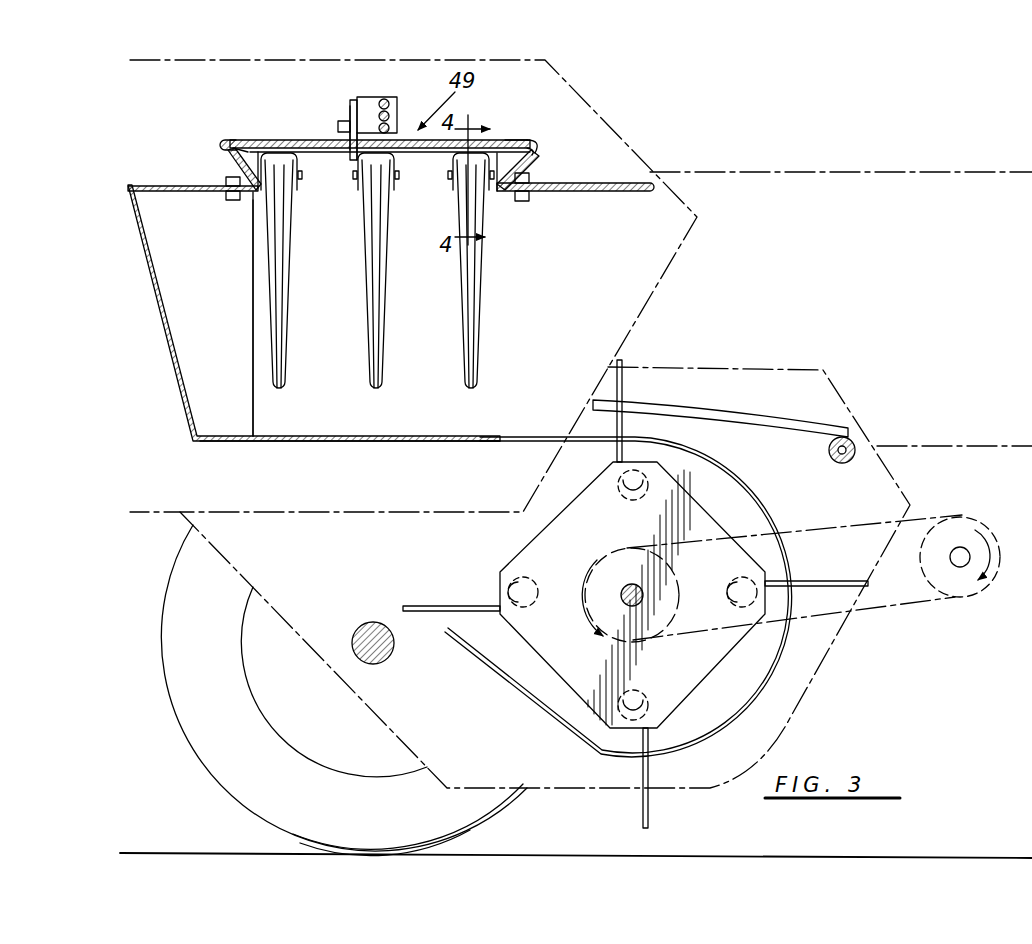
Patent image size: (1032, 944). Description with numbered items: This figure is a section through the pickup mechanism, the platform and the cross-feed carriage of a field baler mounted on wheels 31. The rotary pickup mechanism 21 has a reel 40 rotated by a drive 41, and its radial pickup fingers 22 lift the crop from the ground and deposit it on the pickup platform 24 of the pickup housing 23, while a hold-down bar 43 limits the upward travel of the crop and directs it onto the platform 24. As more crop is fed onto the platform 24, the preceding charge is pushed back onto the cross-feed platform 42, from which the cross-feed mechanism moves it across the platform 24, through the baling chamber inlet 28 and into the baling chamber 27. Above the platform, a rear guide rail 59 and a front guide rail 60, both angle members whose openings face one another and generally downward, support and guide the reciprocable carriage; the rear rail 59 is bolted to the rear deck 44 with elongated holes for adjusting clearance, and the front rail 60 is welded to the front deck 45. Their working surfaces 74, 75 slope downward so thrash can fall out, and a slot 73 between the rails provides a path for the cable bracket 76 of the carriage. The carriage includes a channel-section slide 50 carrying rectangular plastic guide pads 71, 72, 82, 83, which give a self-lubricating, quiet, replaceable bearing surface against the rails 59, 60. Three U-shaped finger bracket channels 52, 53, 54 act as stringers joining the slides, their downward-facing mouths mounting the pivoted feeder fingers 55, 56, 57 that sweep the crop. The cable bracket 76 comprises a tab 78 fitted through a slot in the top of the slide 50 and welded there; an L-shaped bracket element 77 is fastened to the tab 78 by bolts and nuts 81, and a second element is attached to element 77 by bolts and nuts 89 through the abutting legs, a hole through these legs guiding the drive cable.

The rotary pickup mechanism 21 is at (797, 706).
The pickup fingers 22 is at (622, 385).
The pickup housing 23 is at (172, 350).
The pickup platform 24 is at (592, 437).
The baling chamber 27 is at (757, 172).
The baling chamber inlet 28 is at (262, 432).
The wheels 31 is at (182, 708).
The reel 40 is at (684, 680).
The drive 41 is at (930, 518).
The cross-feed platform 42 is at (315, 438).
The hold-down bar 43 is at (752, 412).
The rear deck 44 is at (175, 186).
The front deck 45 is at (624, 184).
The slide 50 is at (300, 146).
The finger bracket channel 52 is at (296, 182).
The finger bracket channel 53 is at (394, 182).
The finger bracket channel 54 is at (455, 186).
The feeder finger 55 is at (290, 262).
The feeder finger 56 is at (388, 270).
The feeder finger 57 is at (464, 290).
The rear guide rail 59 is at (248, 147).
The front guide rail 60 is at (532, 136).
The guide pad 71 is at (524, 141).
The guide pad 72 is at (530, 182).
The slot 73 is at (338, 128).
The working surface 74 is at (545, 160).
The working surface 75 is at (223, 142).
The cable bracket 76 is at (353, 92).
The L-shaped bracket element 77 is at (362, 97).
The tab 78 is at (350, 112).
The bolts and nuts 81 is at (348, 120).
The guide pad 82 is at (256, 148).
The guide pad 83 is at (236, 164).
The bolts and nuts 89 is at (390, 128).